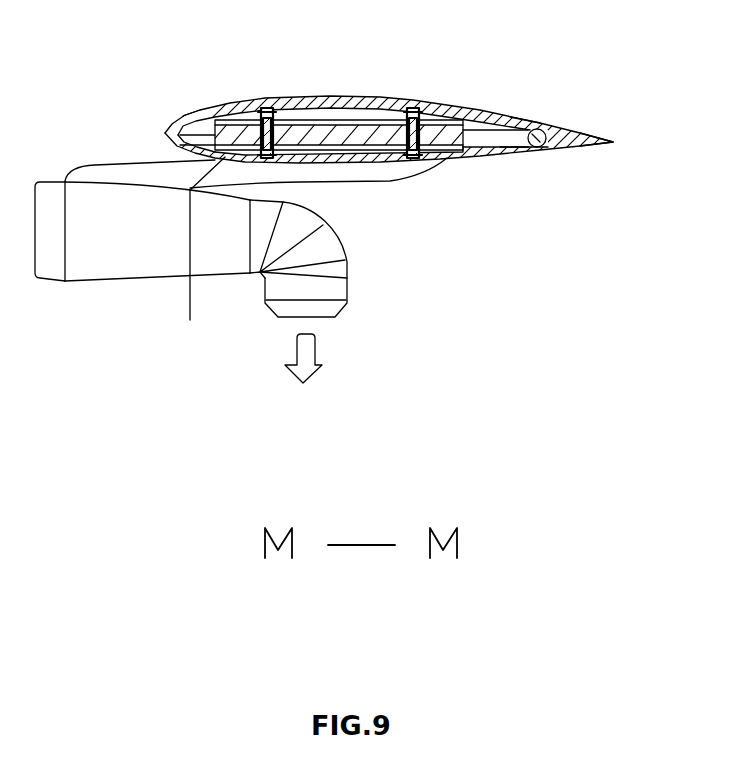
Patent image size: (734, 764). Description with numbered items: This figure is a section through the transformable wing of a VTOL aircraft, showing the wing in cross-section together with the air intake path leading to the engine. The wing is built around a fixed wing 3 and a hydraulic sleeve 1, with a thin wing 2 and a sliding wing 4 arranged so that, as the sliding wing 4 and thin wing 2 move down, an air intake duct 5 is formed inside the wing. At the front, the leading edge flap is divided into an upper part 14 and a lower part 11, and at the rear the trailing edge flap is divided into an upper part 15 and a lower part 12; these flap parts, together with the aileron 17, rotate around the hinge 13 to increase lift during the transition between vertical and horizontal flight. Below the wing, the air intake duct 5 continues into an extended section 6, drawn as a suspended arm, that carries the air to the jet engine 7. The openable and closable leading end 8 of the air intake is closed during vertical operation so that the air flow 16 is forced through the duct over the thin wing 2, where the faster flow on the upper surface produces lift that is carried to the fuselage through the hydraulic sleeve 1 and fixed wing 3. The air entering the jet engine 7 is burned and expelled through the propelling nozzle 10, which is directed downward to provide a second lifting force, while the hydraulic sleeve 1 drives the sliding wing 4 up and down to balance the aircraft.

The hydraulic sleeve 1 is at (268, 103).
The thin wing 2 is at (345, 103).
The fixed wing 3 is at (490, 120).
The sliding wing 4 is at (487, 153).
The air intake duct 5 is at (344, 150).
The extended section of the air intake duct 6 is at (413, 158).
The jet engine 7 is at (118, 232).
The openable/closable leading end of the air intake duct 8 is at (49, 232).
The propelling nozzle 10 is at (305, 290).
The lower part of the leading edge flap 11 is at (217, 153).
The lower part of the trailing edge flap 12 is at (523, 148).
The hinge 13 is at (167, 129).
The upper part of the leading edge flap 14 is at (195, 117).
The upper part of the trailing edge flap 15 is at (527, 128).
The air flow 16 is at (303, 350).
The aileron 17 is at (568, 132).